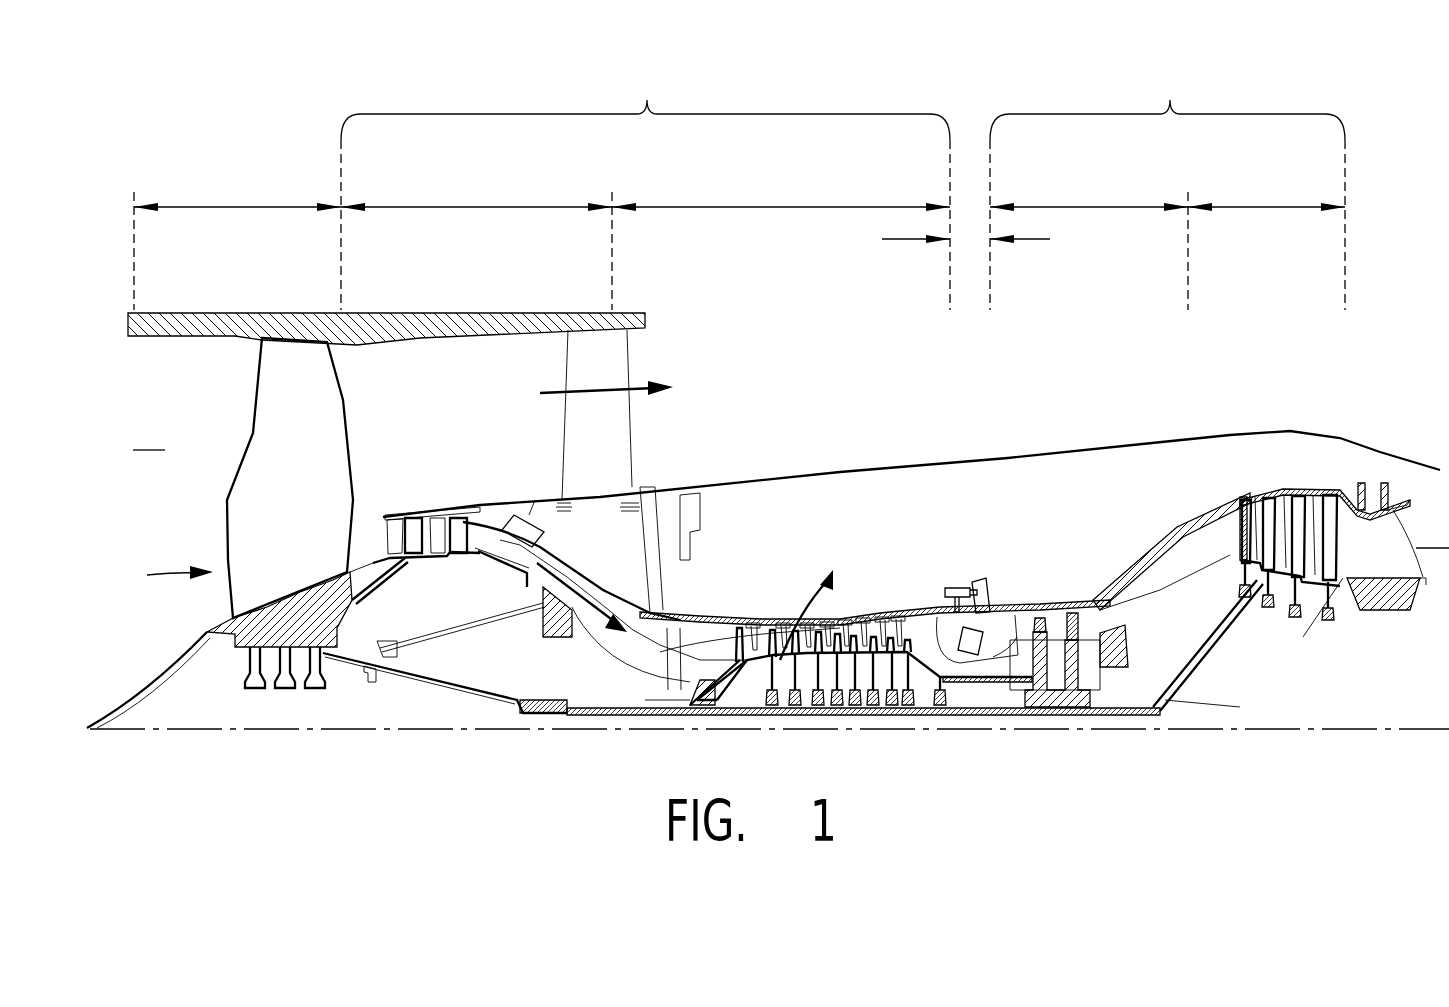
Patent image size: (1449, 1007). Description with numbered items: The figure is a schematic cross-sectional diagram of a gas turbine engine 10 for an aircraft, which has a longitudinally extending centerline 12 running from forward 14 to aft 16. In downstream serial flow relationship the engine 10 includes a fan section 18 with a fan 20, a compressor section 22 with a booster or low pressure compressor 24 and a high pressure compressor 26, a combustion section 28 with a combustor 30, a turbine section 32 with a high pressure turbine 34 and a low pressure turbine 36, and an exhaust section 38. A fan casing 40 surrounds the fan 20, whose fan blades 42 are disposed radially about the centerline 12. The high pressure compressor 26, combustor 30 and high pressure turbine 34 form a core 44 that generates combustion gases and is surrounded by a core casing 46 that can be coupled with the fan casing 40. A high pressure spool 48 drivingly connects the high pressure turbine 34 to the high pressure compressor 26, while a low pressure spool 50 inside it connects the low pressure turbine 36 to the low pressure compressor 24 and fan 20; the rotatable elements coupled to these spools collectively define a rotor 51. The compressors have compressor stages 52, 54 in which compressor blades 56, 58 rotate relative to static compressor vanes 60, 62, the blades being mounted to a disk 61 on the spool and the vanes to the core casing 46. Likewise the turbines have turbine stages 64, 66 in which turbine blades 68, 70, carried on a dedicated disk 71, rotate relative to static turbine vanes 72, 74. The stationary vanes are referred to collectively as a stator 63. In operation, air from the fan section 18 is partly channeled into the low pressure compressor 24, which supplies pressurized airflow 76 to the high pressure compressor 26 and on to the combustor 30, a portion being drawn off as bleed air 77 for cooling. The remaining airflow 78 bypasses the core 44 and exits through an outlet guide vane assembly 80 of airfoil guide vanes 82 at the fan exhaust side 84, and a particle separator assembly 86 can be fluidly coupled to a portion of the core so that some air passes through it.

The gas turbine engine 10 is at (930, 385).
The centerline 12 is at (213, 731).
The forward 14 is at (148, 437).
The aft 16 is at (1432, 535).
The fan section 18 is at (237, 207).
The fan 20 is at (159, 577).
The compressor section 22 is at (647, 100).
The low pressure compressor 24 is at (475, 207).
The high pressure compressor 26 is at (778, 207).
The combustion section 28 is at (893, 240).
The combustor 30 is at (985, 585).
The turbine section 32 is at (1170, 100).
The high pressure turbine 34 is at (1090, 207).
The low pressure turbine 36 is at (1267, 207).
The exhaust section 38 is at (1410, 518).
The fan casing 40 is at (377, 315).
The fan blades 42 is at (310, 382).
The core 44 is at (913, 500).
The core casing 46 is at (1173, 533).
The high pressure spool 48 is at (948, 682).
The low pressure spool 50 is at (545, 707).
The rotor 51 is at (808, 716).
The compressor stages 52 is at (462, 463).
The compressor stages 54 is at (782, 607).
The compressor blades 56 is at (420, 530).
The compressor blades 58 is at (702, 693).
The static compressor vanes 60 is at (395, 527).
The disk 61 is at (428, 560).
The static compressor vanes 62 is at (677, 650).
The stator 63 is at (686, 668).
The turbine stages 64 is at (997, 555).
The turbine stages 66 is at (1270, 455).
The turbine blades 68 is at (1063, 613).
The turbine blades 70 is at (1330, 507).
The disk 71 is at (1060, 667).
The static turbine vanes 72 is at (1036, 618).
The static turbine vanes 74 is at (1312, 507).
The pressurized airflow 76 is at (578, 597).
The bleed air 77 is at (808, 575).
The airflow 78 is at (558, 393).
The outlet guide vane assembly 80 is at (640, 452).
The airfoil guide vanes 82 is at (575, 427).
The fan exhaust side 84 is at (647, 367).
The particle separator assembly 86 is at (527, 527).